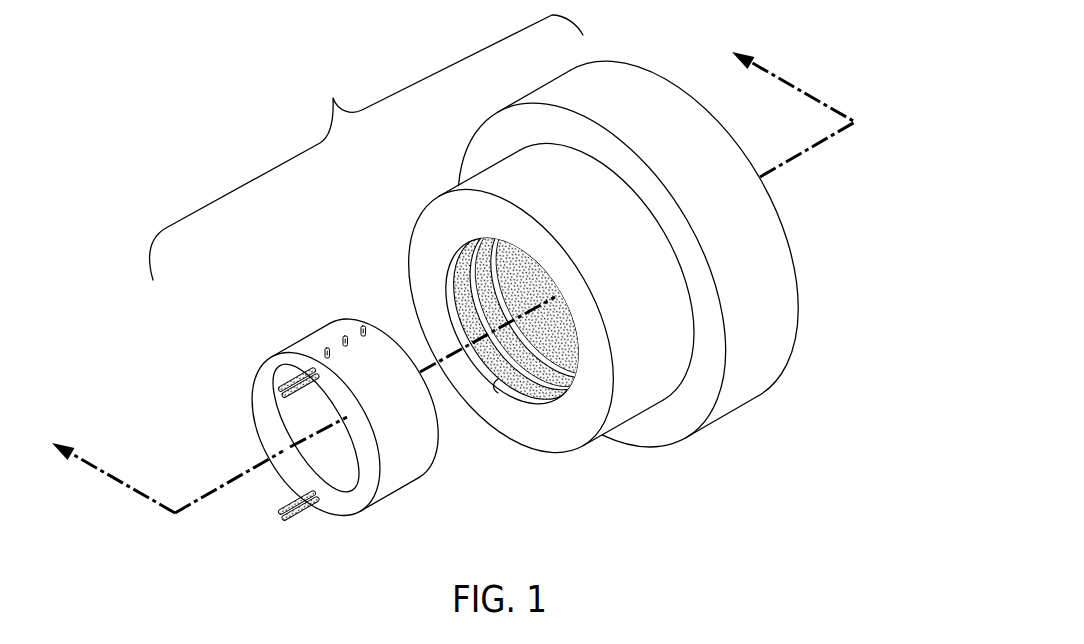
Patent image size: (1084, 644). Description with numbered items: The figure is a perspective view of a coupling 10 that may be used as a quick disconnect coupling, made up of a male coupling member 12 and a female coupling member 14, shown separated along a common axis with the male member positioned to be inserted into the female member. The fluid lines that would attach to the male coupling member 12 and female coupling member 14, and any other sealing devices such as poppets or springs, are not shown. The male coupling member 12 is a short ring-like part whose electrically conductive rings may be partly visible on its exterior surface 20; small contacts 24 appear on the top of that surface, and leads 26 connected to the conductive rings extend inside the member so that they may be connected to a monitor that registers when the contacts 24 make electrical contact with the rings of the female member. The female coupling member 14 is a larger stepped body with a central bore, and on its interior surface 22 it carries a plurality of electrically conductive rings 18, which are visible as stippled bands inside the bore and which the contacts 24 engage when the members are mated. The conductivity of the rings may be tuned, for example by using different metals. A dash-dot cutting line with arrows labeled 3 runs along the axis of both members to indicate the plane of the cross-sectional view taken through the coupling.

The section line 3- 3 is at (453, 268).
The coupling 10 is at (333, 98).
The male coupling member 12 is at (250, 443).
The female coupling member 14 is at (807, 208).
The electrically conductive rings 18 is at (540, 403).
The exterior surface 20 is at (400, 478).
The interior surface 22 is at (493, 393).
The contacts 24 is at (340, 326).
The leads 26 is at (297, 522).